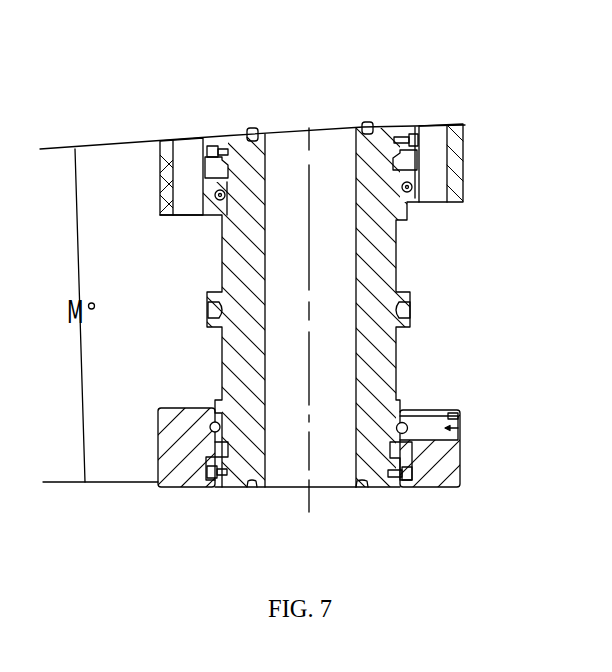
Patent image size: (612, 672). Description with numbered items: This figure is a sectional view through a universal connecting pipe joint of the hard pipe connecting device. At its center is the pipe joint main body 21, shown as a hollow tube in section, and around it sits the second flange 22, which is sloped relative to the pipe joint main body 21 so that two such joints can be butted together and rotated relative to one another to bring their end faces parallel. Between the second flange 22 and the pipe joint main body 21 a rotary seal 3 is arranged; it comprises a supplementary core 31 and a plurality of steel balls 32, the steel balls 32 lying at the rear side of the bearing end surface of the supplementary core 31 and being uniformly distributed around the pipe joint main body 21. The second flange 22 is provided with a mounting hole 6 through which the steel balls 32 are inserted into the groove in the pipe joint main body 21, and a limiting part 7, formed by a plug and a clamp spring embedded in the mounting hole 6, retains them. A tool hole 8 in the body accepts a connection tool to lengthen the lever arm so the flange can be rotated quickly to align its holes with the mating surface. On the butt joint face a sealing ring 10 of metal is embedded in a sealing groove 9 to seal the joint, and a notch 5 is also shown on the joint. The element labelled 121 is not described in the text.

The rotary seal 3 is at (172, 118).
The supplementary core 31 is at (212, 157).
The steel ball 32 is at (206, 186).
The notch 5 is at (250, 128).
The sealing ring 10 is at (370, 122).
The O-ring 121 is at (408, 182).
The second flange 22 is at (465, 177).
The tool hole 8 is at (412, 310).
The pipe joint main body 21 is at (368, 392).
The limiting part 7 is at (460, 428).
The mounting hole 6 is at (422, 431).
The sealing groove 9 is at (366, 490).